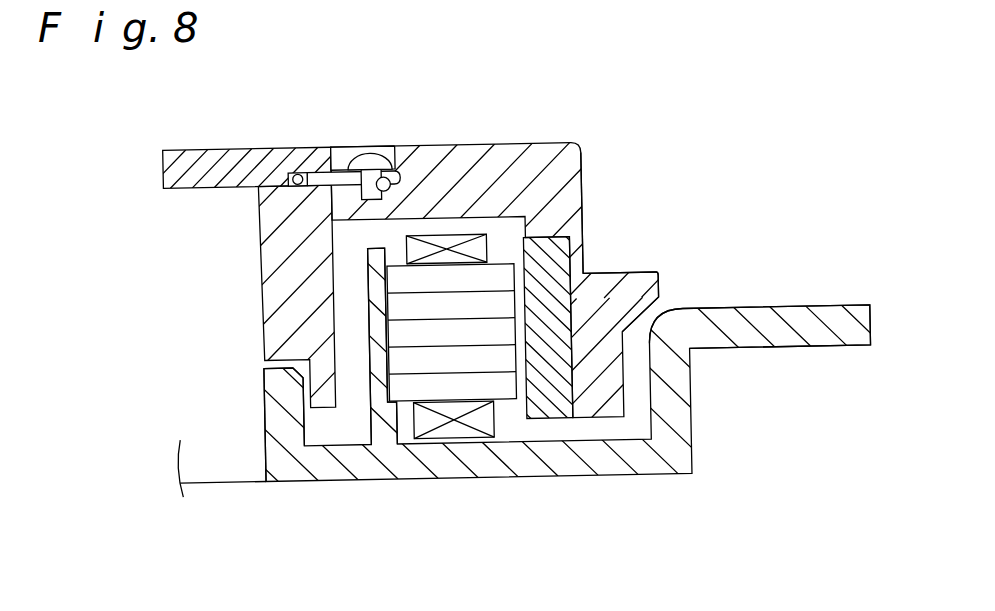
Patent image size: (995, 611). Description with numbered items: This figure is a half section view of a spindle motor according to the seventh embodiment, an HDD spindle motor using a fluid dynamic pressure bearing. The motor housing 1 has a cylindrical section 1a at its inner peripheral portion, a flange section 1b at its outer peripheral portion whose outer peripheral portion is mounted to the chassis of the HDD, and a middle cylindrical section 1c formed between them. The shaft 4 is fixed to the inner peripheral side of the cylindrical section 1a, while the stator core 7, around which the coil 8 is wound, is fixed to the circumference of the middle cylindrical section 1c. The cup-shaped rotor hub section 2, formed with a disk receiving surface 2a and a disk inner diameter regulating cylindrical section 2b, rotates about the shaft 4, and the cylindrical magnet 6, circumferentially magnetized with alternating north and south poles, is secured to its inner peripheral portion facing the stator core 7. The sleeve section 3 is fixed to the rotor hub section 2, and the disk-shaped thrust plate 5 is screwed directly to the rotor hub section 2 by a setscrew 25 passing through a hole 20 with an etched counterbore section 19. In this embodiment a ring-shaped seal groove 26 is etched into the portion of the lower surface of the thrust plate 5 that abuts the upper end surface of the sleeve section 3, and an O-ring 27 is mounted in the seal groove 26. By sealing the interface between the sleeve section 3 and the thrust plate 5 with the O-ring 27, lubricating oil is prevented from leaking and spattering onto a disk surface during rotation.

The motor housing 1 is at (497, 389).
The cylindrical section 1a is at (287, 453).
The flange section 1b is at (768, 327).
The middle cylindrical section 1c is at (378, 425).
The rotor hub section 2 is at (530, 248).
The disk receiving surface 2a is at (646, 278).
The disk inner diameter regulating cylindrical section 2b is at (587, 195).
The sleeve section 3 is at (263, 219).
The shaft 4 is at (214, 455).
The thrust plate 5 is at (270, 143).
The magnet 6 is at (551, 398).
The stator core 7 is at (447, 377).
The coil 8 is at (473, 420).
The counterbore section 19 is at (341, 169).
The hole 20 is at (398, 179).
The setscrew 25 is at (383, 156).
The seal groove 26 is at (310, 166).
The O-ring 27 is at (338, 169).